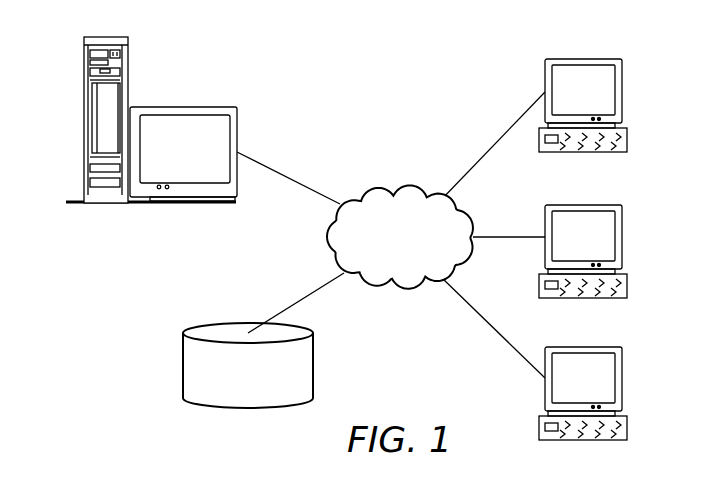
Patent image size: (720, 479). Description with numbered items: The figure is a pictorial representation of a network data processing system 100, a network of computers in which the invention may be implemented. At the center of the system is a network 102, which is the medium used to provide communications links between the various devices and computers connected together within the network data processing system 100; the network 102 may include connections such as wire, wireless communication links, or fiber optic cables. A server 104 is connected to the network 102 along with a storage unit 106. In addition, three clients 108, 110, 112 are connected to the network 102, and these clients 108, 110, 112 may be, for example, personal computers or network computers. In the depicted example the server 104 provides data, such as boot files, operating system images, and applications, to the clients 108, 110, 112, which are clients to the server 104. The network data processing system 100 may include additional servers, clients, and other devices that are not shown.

The network data processing system 100 is at (476, 66).
The network 102 is at (368, 190).
The server 104 is at (83, 121).
The storage unit 106 is at (183, 366).
The client 108 is at (622, 90).
The client 110 is at (622, 224).
The client 112 is at (622, 380).